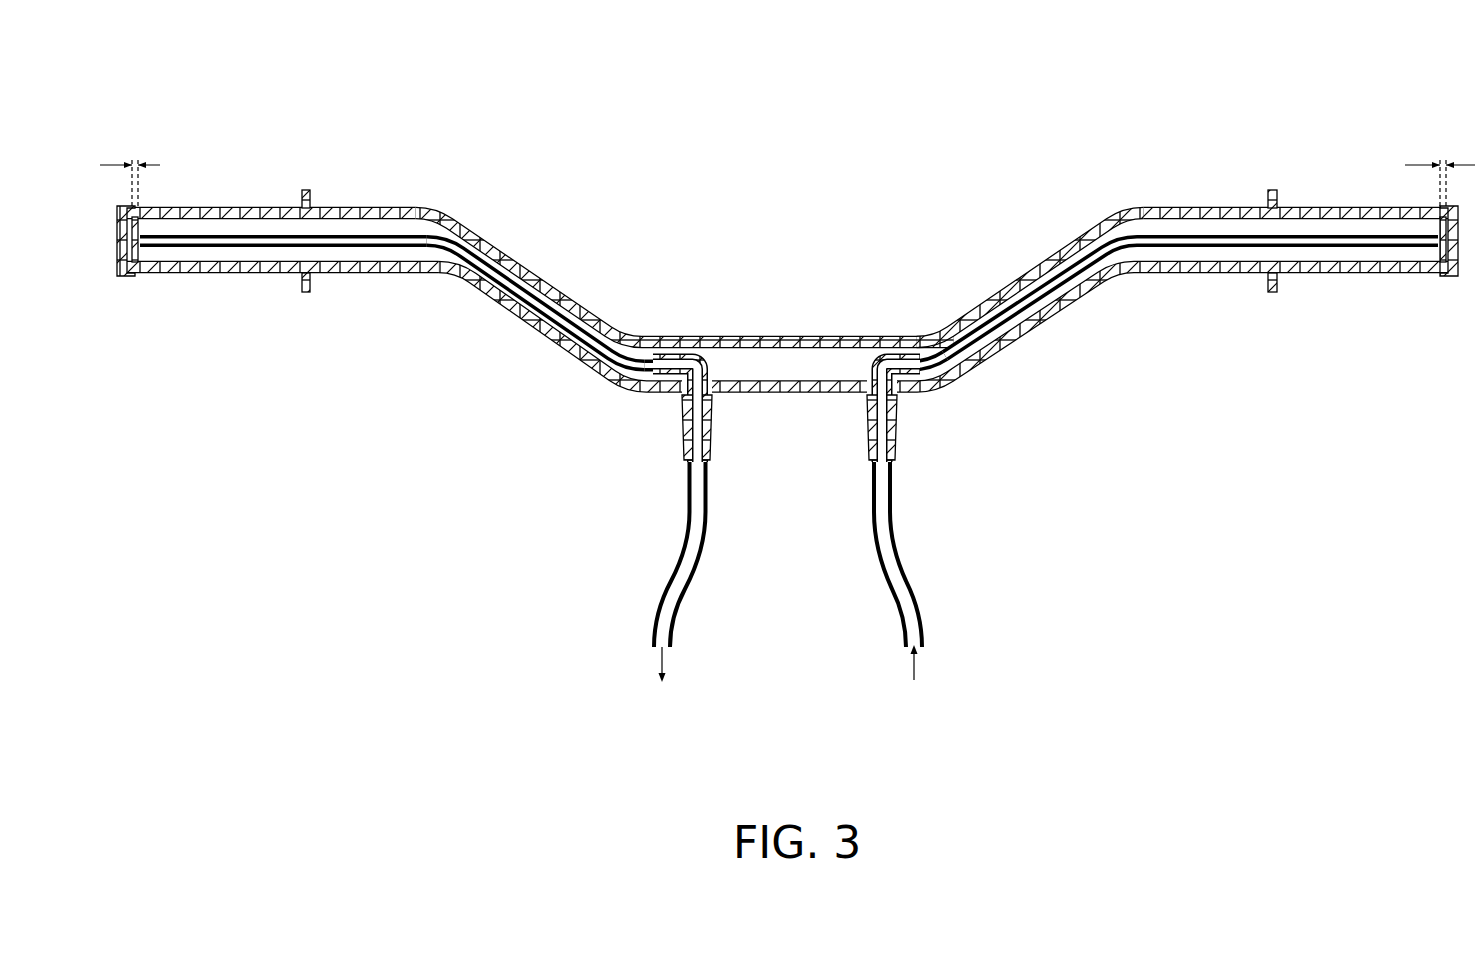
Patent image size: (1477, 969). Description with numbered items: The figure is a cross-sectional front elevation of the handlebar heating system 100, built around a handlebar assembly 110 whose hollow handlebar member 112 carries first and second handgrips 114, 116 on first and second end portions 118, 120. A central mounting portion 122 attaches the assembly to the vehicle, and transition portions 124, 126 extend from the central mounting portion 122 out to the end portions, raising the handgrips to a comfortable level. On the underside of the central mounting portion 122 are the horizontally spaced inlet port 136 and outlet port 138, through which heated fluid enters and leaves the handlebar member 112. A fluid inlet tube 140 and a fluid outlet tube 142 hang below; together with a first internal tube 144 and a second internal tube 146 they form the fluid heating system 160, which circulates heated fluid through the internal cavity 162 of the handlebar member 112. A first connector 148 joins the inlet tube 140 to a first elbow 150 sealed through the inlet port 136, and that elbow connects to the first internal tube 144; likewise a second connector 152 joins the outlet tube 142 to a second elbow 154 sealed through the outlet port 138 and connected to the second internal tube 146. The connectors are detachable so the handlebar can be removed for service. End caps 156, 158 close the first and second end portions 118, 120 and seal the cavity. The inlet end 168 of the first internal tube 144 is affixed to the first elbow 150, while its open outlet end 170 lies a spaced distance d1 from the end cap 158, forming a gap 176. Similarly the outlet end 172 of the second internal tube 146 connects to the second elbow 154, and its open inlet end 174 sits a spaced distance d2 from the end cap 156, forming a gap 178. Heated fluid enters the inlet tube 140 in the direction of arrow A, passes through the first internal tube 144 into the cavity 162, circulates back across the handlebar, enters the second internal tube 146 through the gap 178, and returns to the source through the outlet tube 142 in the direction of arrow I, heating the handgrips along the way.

The handlebar heating system 100 is at (487, 88).
The handlebar assembly 110 is at (485, 390).
The hollow handlebar member 112 is at (478, 208).
The first handgrip 114 is at (240, 193).
The second handgrip 116 is at (1335, 188).
The first end portion 118 is at (345, 210).
The second end portion 120 is at (1230, 210).
The central mounting portion 122 is at (788, 337).
The transition portion 124 is at (535, 262).
The transition portion 126 is at (1022, 275).
The inlet port 136 is at (905, 390).
The outlet port 138 is at (680, 388).
The fluid inlet tube 140 is at (905, 565).
The fluid outlet tube 142 is at (683, 545).
The first internal tube 144 is at (1085, 285).
The second internal tube 146 is at (490, 292).
The first connector 148 is at (893, 402).
The first elbow 150 is at (880, 357).
The second connector 152 is at (684, 402).
The second elbow 154 is at (680, 357).
The end cap 156 is at (118, 268).
The end cap 158 is at (1455, 268).
The fluid heating system 160 is at (1017, 405).
The internal cavity 162 is at (787, 369).
The inlet end 168 is at (920, 357).
The outlet end 170 is at (1420, 244).
The outlet end 172 is at (655, 357).
The inlet end 174 is at (148, 244).
The gap 176 is at (1432, 210).
The gap 178 is at (135, 232).
The spaced distance d1 is at (1436, 172).
The spaced distance d2 is at (143, 172).
The arrow I is at (660, 660).
The arrow A is at (916, 668).